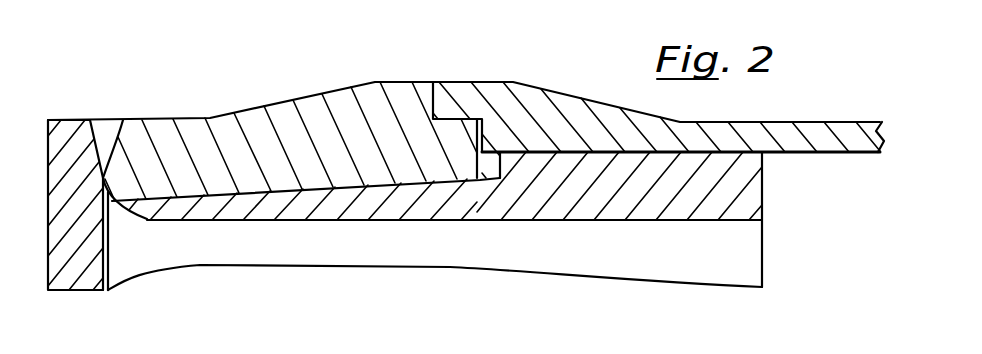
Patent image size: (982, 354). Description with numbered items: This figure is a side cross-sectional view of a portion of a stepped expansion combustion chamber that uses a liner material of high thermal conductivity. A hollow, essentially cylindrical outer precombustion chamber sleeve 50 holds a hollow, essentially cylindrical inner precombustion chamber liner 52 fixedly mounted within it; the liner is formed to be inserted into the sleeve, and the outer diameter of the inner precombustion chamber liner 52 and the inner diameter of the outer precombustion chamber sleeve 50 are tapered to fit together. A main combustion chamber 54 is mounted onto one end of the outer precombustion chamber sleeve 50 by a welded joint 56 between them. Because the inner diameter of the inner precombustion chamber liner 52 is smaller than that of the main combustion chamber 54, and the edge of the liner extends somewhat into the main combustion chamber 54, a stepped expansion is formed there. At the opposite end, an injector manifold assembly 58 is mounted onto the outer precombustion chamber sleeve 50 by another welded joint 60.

The outer precombustion chamber sleeve 50 is at (283, 113).
The inner precombustion chamber liner 52 is at (483, 220).
The main combustion chamber 54 is at (563, 110).
The welded joint 56 is at (433, 92).
The injector manifold assembly 58 is at (70, 140).
The welded joint 60 is at (103, 130).